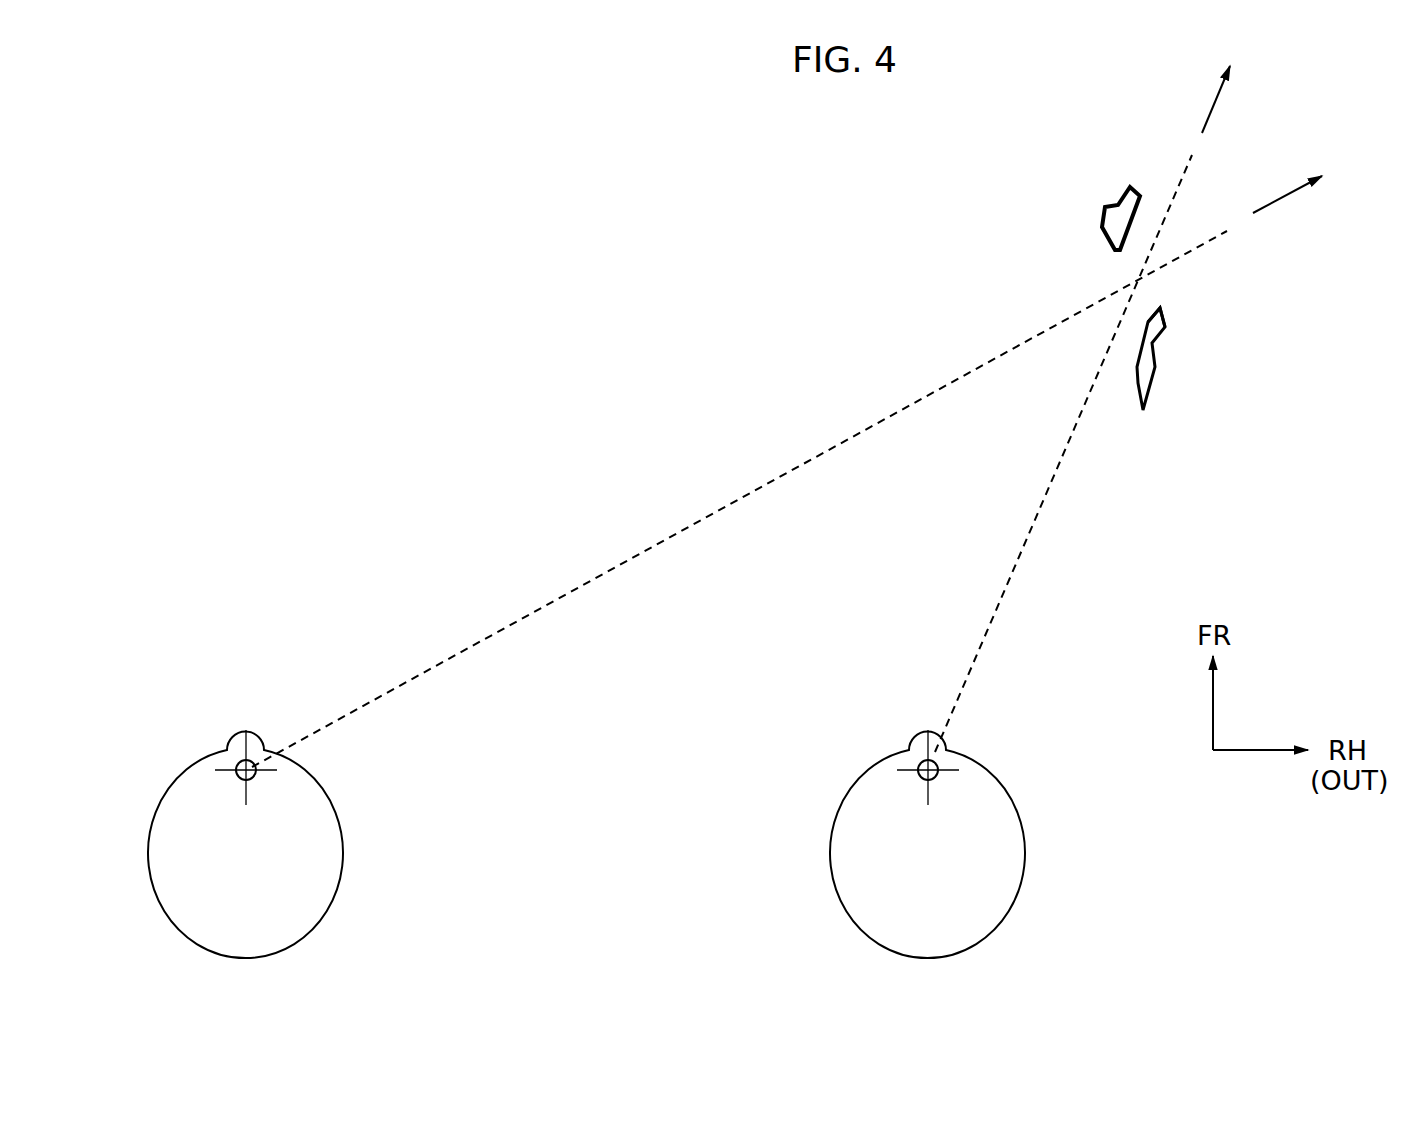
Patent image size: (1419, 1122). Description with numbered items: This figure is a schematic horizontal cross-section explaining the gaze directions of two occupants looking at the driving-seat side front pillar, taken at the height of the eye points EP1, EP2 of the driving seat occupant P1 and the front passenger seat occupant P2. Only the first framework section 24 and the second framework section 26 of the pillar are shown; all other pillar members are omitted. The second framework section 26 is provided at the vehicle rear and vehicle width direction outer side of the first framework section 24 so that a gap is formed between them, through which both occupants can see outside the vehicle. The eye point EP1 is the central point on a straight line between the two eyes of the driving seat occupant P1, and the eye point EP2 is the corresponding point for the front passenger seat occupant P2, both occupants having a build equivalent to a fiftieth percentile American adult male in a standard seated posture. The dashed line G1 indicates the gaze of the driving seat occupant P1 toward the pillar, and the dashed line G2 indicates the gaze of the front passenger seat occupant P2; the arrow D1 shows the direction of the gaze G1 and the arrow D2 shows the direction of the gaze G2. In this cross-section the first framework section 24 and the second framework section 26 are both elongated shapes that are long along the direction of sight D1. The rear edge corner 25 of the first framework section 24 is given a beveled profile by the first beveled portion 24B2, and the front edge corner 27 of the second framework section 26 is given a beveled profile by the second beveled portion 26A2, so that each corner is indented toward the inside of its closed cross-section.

The first framework section 24 is at (1097, 210).
The first beveled portion 24B2 is at (1047, 277).
The rear edge corner 25 is at (1120, 252).
The second framework section 26 is at (1158, 366).
The second beveled portion 26A2 is at (1219, 324).
The front edge corner 27 is at (1160, 308).
The direction of sight D1 is at (1211, 101).
The direction of sight D2 is at (1279, 201).
The gaze G1 is at (1043, 506).
The gaze G2 is at (712, 515).
The driving seat occupant P1 is at (1030, 855).
The front passenger seat occupant P2 is at (348, 857).
The eye point EP1 is at (925, 781).
The eye point EP2 is at (243, 781).